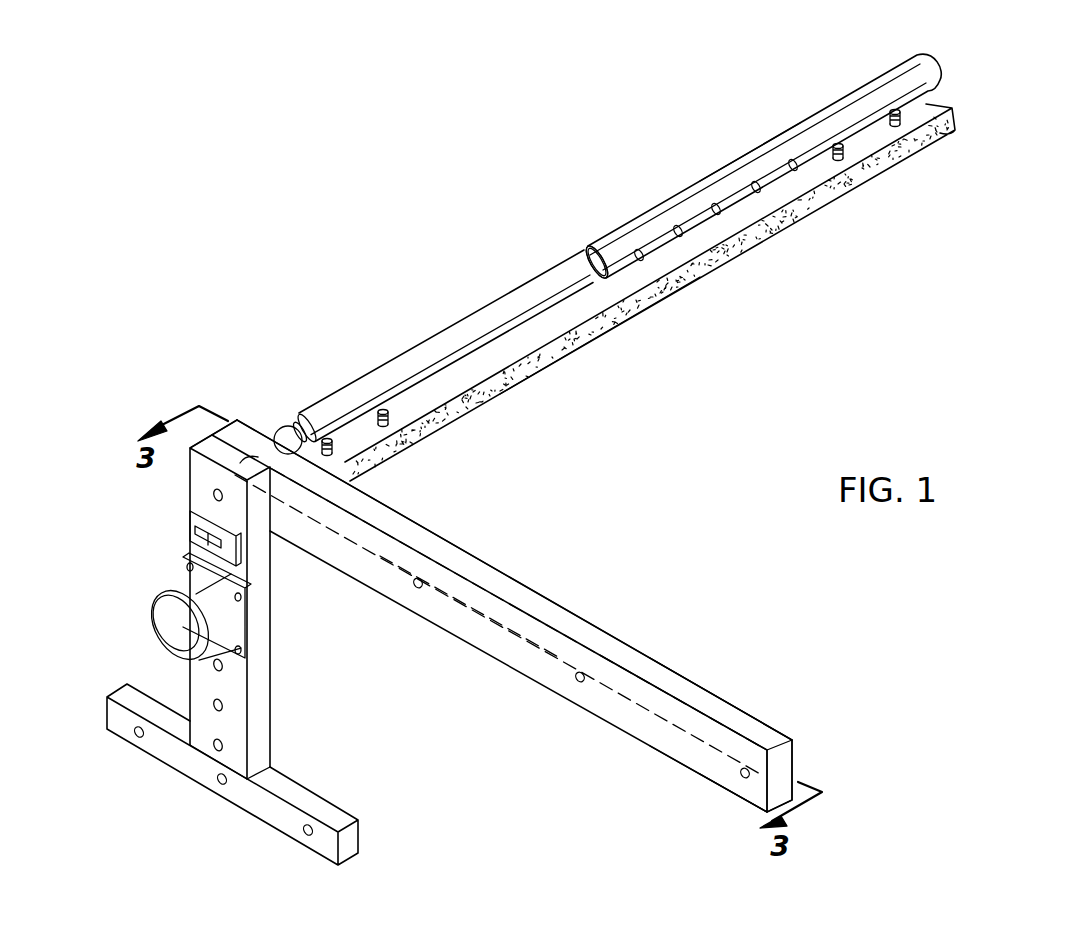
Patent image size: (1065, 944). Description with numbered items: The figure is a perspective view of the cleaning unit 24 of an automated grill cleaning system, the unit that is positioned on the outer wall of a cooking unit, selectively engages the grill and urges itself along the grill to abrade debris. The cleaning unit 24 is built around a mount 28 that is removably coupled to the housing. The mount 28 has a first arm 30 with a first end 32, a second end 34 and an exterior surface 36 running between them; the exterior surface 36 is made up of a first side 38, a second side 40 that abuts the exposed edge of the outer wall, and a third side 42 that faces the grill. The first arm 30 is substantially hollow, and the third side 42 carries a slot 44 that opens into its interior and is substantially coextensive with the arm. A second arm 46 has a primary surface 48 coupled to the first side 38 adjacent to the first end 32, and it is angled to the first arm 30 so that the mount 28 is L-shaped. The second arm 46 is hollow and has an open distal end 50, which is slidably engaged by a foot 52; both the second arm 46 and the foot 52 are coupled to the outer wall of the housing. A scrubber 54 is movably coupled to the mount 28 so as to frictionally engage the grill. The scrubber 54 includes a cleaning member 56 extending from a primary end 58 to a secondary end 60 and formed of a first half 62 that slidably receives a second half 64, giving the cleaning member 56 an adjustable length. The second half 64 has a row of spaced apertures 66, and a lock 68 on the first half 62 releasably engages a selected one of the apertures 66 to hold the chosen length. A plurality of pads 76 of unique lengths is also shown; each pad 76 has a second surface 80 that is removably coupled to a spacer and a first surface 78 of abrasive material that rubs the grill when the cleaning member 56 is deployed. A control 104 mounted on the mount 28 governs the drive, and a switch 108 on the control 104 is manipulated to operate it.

The cleaning unit 24 is at (386, 282).
The mount 28 is at (607, 606).
The first arm 30 is at (497, 565).
The first end 32 is at (237, 418).
The second end 34 is at (795, 768).
The exterior surface 36 is at (476, 621).
The first side 38 is at (712, 768).
The second side 40 is at (745, 797).
The third side 42 is at (752, 712).
The slot 44 is at (657, 690).
The second arm 46 is at (272, 657).
The primary surface 48 is at (271, 520).
The distal end 50 is at (243, 790).
The foot 52 is at (356, 830).
The scrubber 54 is at (548, 258).
The cleaning member 56 is at (700, 178).
The primary end 58 is at (283, 423).
The secondary end 60 is at (945, 68).
The first half 62 is at (465, 316).
The second half 64 is at (738, 156).
The apertures 66 is at (641, 258).
The lock 68 is at (676, 226).
The pads 76 is at (960, 112).
The first surface 78 is at (621, 334).
The second surface 80 is at (558, 337).
The control 104 is at (195, 520).
The switch 108 is at (196, 537).